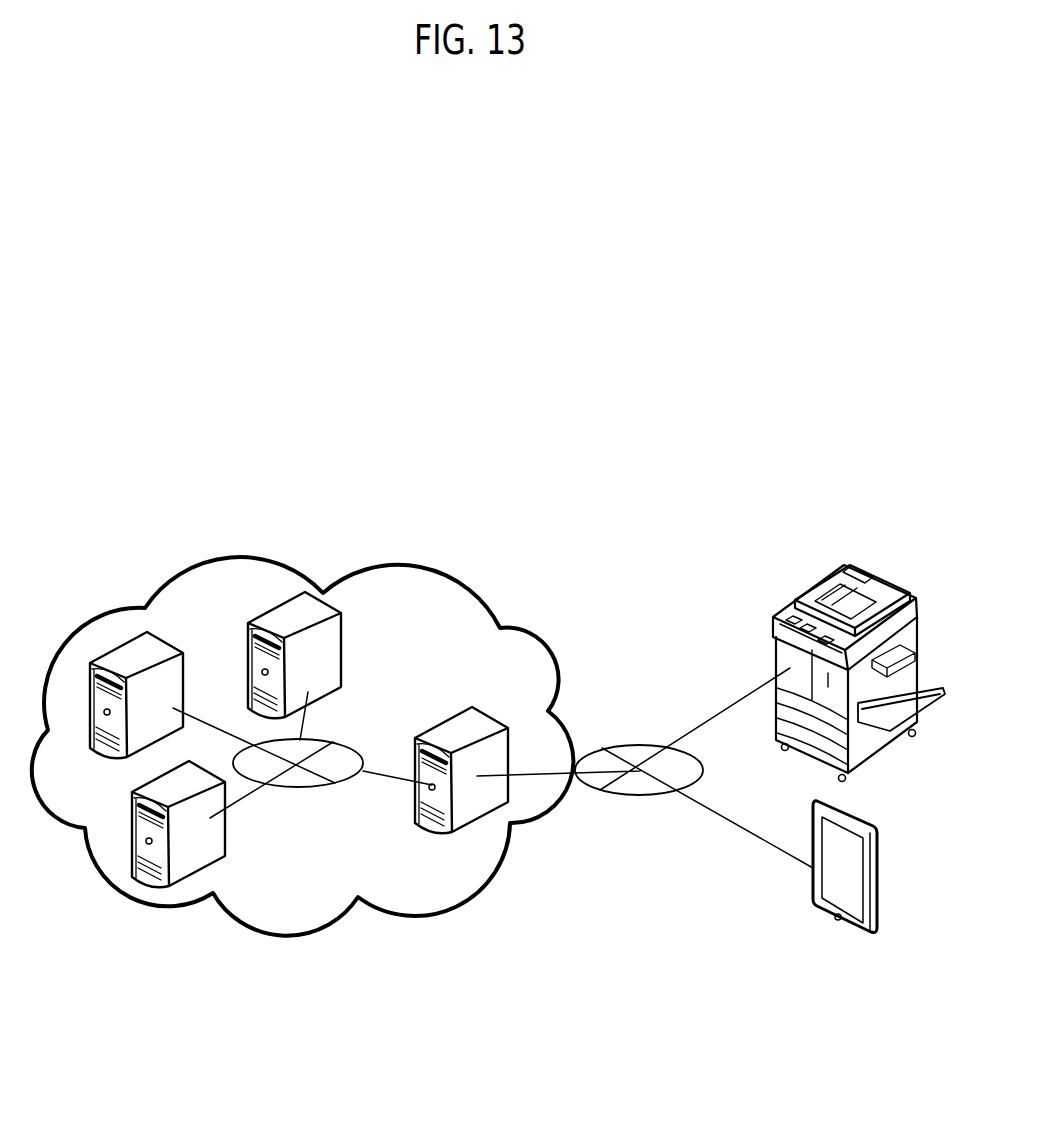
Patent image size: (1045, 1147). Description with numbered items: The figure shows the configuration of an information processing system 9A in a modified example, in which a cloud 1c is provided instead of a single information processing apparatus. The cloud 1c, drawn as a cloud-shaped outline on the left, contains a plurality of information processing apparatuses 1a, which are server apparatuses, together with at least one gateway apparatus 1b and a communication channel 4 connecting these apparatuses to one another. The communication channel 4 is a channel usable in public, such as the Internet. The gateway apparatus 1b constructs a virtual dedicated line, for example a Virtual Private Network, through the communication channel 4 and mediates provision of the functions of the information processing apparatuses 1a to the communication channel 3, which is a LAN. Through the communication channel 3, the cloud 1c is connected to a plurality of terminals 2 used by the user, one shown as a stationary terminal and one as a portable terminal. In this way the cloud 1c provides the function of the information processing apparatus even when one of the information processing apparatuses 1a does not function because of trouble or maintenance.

The information processing apparatus 1a is at (183, 668).
The gateway apparatus 1b is at (458, 728).
The cloud 1c is at (481, 597).
The terminal 2 is at (787, 660).
The communication channel 3 is at (636, 744).
The communication channel 4 is at (320, 787).
The information processing system 9A is at (795, 547).